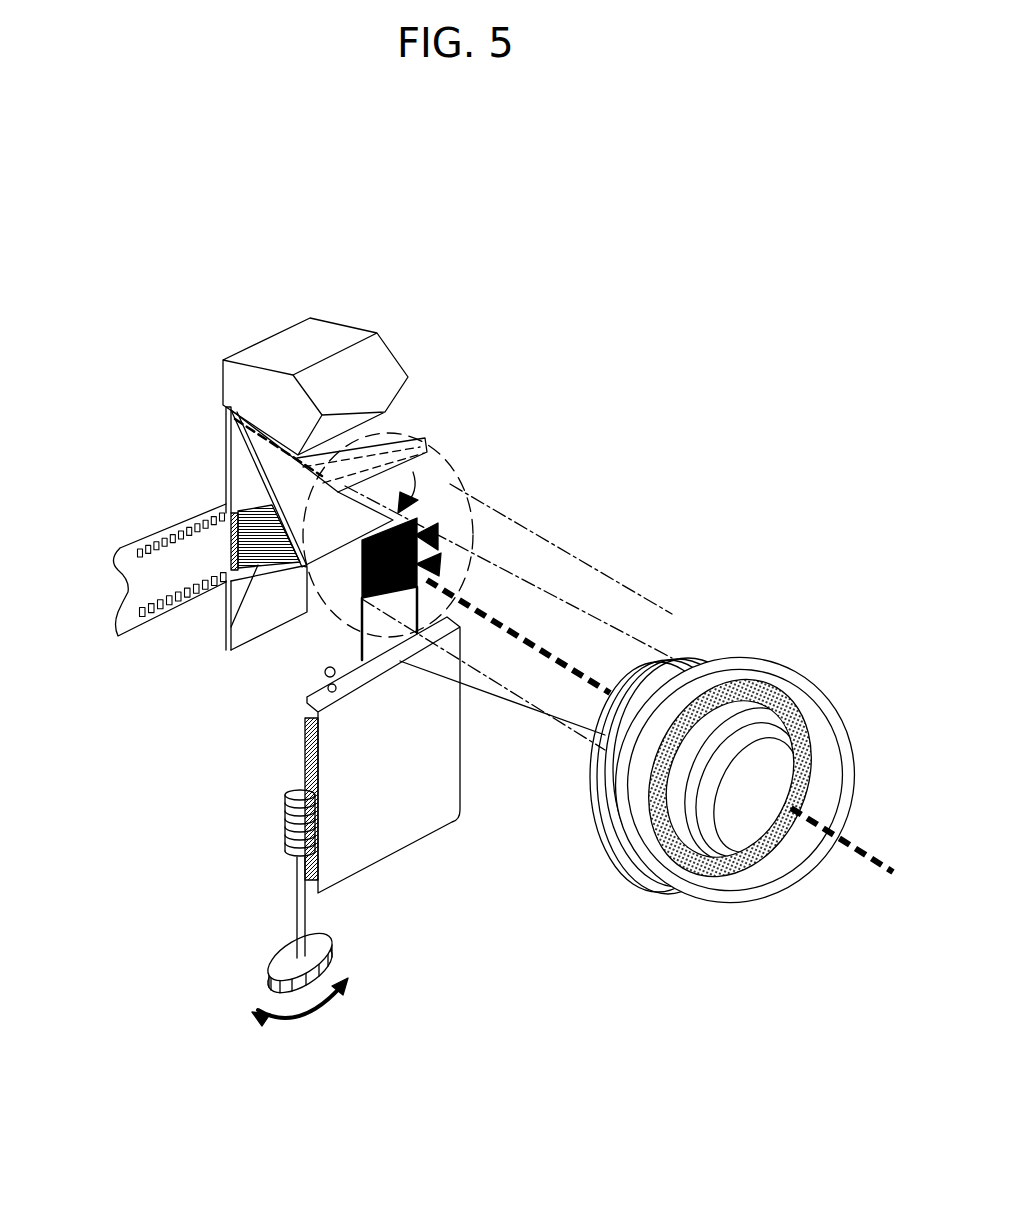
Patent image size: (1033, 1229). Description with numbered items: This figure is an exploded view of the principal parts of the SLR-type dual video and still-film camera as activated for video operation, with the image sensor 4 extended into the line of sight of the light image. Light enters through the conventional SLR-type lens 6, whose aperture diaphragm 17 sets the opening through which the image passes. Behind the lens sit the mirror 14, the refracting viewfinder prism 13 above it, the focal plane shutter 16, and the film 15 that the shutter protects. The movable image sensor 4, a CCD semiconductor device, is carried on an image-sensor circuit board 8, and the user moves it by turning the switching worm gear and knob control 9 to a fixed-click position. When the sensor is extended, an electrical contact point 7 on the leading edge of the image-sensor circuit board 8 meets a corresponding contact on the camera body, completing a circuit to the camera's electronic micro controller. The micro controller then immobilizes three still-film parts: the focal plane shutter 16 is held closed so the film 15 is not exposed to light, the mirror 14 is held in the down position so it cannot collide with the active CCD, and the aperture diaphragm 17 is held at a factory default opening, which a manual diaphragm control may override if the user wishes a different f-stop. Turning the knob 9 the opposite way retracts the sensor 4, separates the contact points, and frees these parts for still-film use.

The image sensor 4 is at (421, 540).
The SLR-type lens 6 is at (735, 775).
The electrical contact point 7 is at (307, 712).
The image-sensor circuit board 8 is at (428, 858).
The switching worm gear and knob control 9 is at (276, 926).
The refracting viewfinder prism 13 is at (372, 357).
The mirror 14 is at (283, 488).
The film 15 is at (139, 604).
The focal plane shutter 16 is at (231, 627).
The aperture diaphragm 17 is at (663, 865).